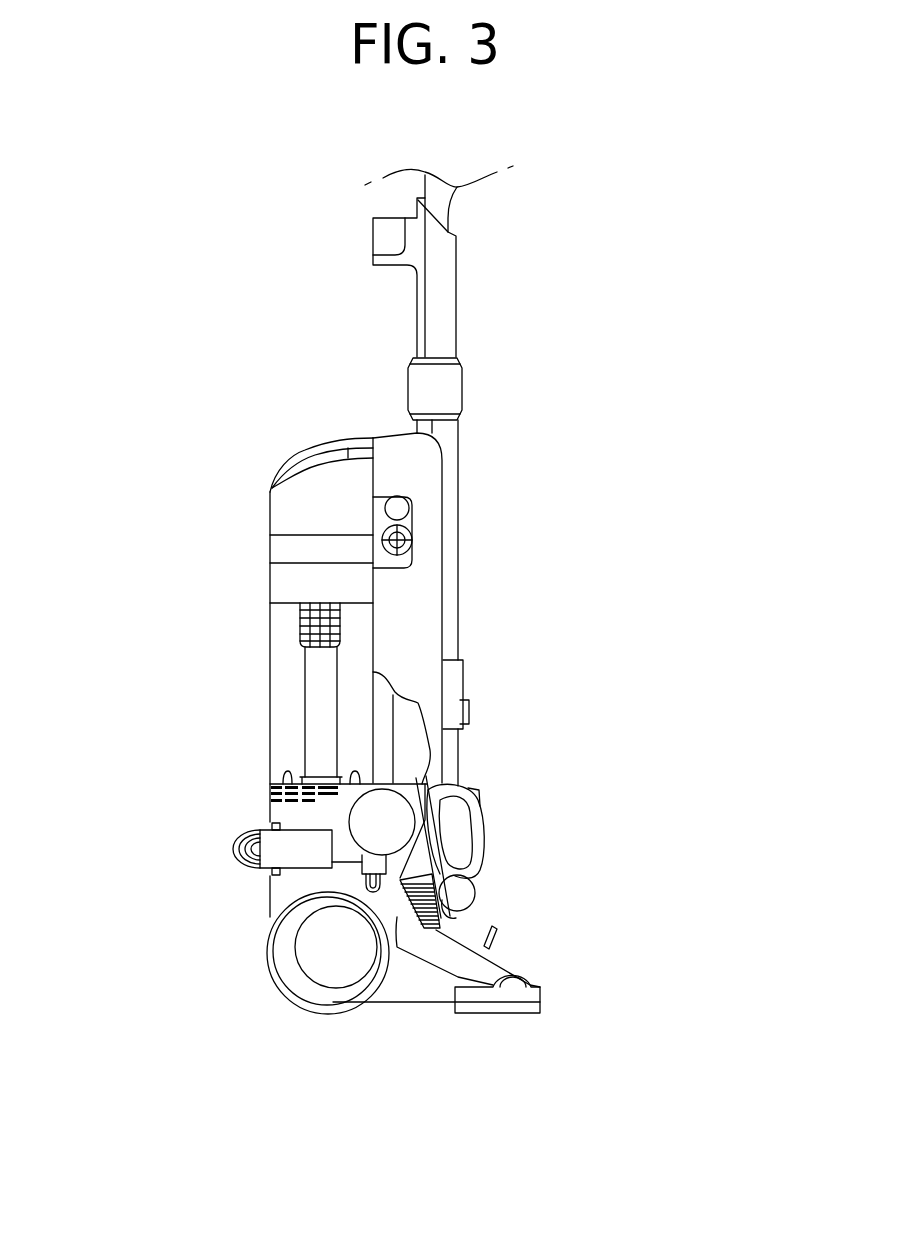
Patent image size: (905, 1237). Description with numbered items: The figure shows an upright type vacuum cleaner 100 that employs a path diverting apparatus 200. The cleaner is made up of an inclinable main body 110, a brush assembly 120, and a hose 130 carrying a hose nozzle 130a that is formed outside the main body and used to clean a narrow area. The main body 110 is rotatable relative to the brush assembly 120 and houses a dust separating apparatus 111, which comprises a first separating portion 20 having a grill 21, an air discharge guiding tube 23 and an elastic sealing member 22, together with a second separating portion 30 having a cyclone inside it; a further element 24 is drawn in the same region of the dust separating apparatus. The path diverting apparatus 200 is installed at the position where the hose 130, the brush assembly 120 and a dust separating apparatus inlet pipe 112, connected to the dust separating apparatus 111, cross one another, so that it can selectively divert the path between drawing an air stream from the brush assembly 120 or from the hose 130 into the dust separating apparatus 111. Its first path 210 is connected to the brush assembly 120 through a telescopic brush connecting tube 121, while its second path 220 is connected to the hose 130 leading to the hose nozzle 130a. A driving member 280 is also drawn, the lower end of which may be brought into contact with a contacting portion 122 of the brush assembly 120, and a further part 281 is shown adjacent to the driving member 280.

The upright type vacuum cleaner 100 is at (713, 963).
The main body 110 is at (477, 754).
The dust separating apparatus 111 is at (270, 638).
The dust separating apparatus inlet pipe 112 is at (407, 713).
The brush assembly 120 is at (500, 950).
The telescopic brush connecting tube 121 is at (428, 925).
The contacting portion 122 is at (393, 900).
The hose 130 is at (343, 853).
The hose nozzle 130a is at (453, 562).
The path diverting apparatus 200 is at (337, 813).
The first path 210 is at (413, 867).
The second path 220 is at (238, 848).
The driving member 280 is at (362, 881).
The drive shaft 281 is at (393, 887).
The first separating portion 20 is at (275, 728).
The grill 21 is at (300, 627).
The elastic sealing member 22 is at (303, 700).
The air discharge guiding tube 23 is at (300, 784).
The exhaust vents 24 is at (292, 786).
The second separating portion 30 is at (285, 510).